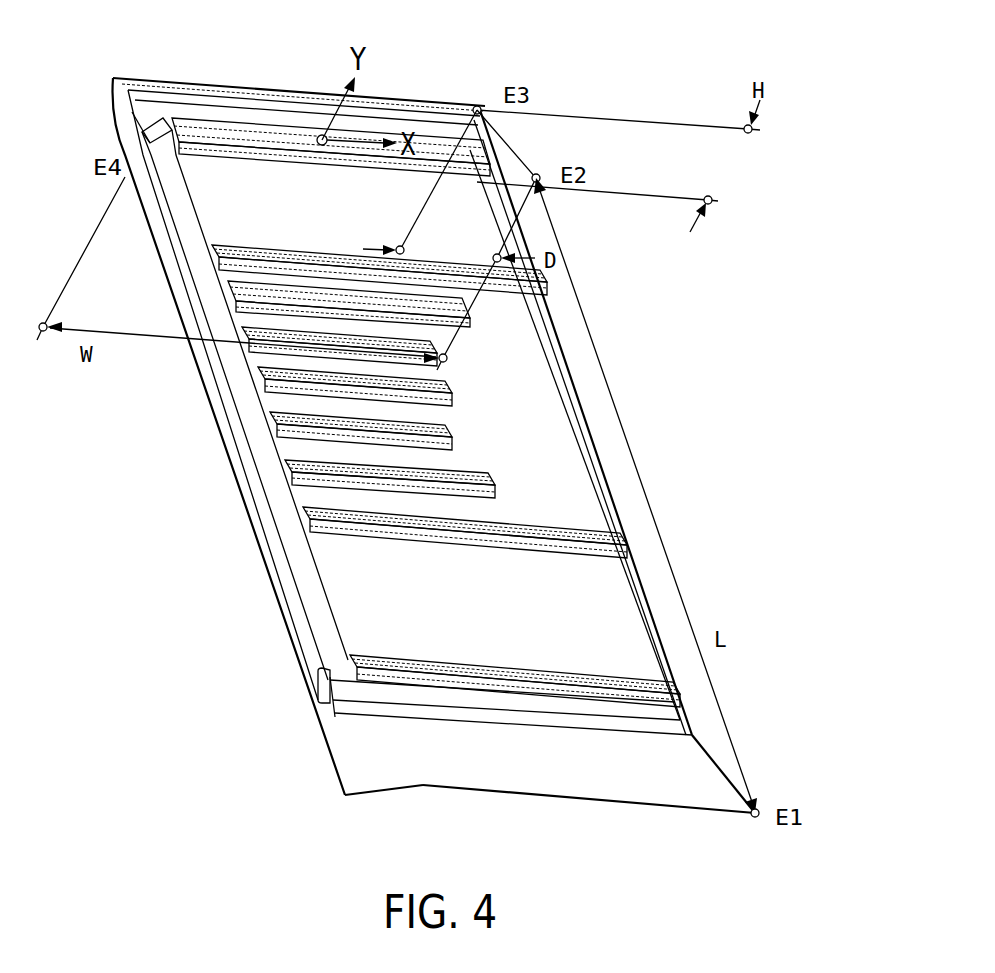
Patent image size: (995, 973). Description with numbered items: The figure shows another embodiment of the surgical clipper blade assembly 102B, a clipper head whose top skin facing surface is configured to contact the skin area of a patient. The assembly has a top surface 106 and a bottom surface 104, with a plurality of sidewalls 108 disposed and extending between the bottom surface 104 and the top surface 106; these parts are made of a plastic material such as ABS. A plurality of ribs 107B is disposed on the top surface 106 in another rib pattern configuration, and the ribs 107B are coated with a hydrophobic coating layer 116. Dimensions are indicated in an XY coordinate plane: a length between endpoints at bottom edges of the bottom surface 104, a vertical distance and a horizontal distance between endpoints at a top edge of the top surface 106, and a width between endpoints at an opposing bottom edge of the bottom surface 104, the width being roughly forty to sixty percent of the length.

The surgical clipper blade assembly 102B is at (783, 97).
The bottom surface 104 is at (336, 734).
The top surface 106 is at (568, 414).
The ribs 107B is at (272, 428).
The hydrophobic coating layer 116 is at (291, 463).
The sidewalls 108 is at (658, 672).